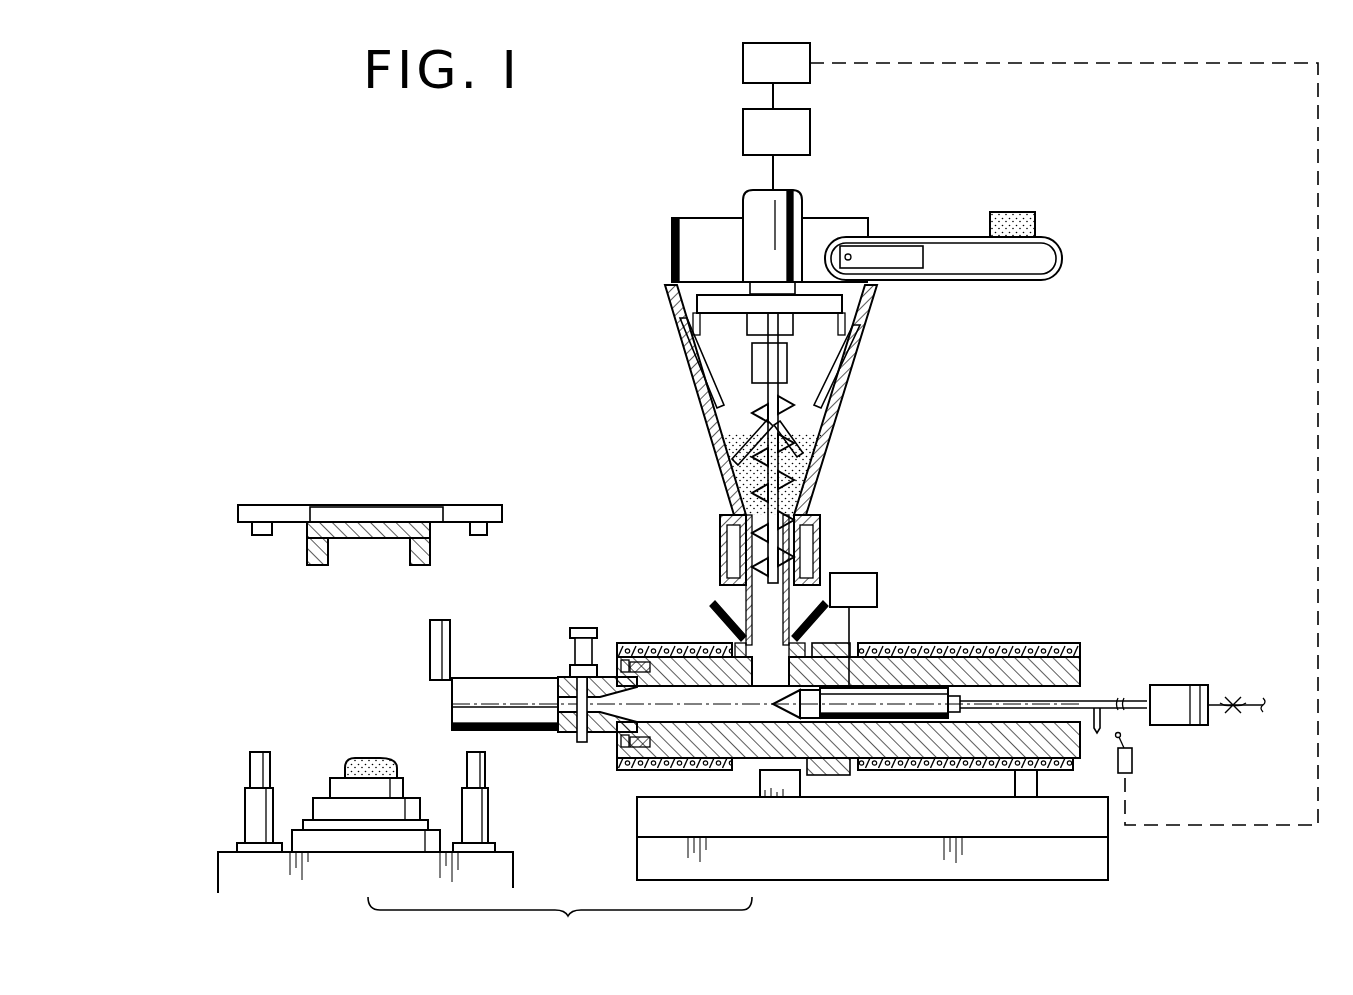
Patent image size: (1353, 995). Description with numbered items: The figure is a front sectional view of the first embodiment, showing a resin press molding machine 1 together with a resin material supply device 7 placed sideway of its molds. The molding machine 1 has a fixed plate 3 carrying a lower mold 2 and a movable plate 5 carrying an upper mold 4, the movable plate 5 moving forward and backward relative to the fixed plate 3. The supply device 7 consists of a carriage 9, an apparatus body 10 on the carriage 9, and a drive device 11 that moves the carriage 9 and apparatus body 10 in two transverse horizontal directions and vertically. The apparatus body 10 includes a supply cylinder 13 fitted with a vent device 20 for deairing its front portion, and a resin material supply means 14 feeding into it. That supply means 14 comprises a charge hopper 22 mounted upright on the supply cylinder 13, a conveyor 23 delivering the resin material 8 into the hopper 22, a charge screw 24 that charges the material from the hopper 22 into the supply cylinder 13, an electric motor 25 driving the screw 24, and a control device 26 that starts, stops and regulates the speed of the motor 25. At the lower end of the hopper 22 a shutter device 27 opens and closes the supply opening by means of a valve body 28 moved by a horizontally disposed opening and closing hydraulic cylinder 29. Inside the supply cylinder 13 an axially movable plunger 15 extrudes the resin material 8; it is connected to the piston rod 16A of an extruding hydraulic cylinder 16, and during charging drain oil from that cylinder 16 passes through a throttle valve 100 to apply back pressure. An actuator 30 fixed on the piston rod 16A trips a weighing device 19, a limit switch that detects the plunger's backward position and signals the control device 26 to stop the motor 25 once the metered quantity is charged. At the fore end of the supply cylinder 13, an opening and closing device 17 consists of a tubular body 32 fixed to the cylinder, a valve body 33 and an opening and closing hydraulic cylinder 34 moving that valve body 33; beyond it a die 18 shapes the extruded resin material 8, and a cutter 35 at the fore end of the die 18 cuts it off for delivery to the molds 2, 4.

The resin press molding machine 1 is at (390, 502).
The lower mold 2 is at (401, 786).
The fixed plate 3 is at (505, 857).
The upper mold 4 is at (432, 550).
The movable plate 5 is at (497, 513).
The resin material supply device 7 is at (768, 694).
The resin material 8 is at (1015, 214).
The carriage 9 is at (876, 831).
The apparatus body 10 is at (660, 633).
The drive device 11 is at (878, 874).
The supply cylinder 13 is at (660, 748).
The resin material supply means 14 is at (858, 401).
The plunger 15 is at (915, 695).
The extruding hydraulic cylinder 16 is at (1195, 727).
The piston rod 16A is at (1093, 706).
The opening and closing device 17 is at (544, 699).
The die 18 is at (520, 715).
The weighing device 19 is at (1133, 768).
The vent device 20 is at (866, 603).
The charge hopper 22 is at (700, 421).
The conveyor 23 is at (990, 281).
The charge screw 24 is at (782, 470).
The electric motor 25 is at (762, 144).
The control device 26 is at (762, 76).
The shutter device 27 is at (728, 610).
The valve body 28 is at (742, 643).
The opening and closing hydraulic cylinder 29 is at (745, 618).
The actuator 30 is at (1098, 740).
The tubular body 32 is at (574, 733).
The valve body 33 is at (585, 742).
The opening and closing hydraulic cylinder 34 is at (578, 629).
The cutter 35 is at (431, 656).
The throttle valve 100 is at (1232, 700).